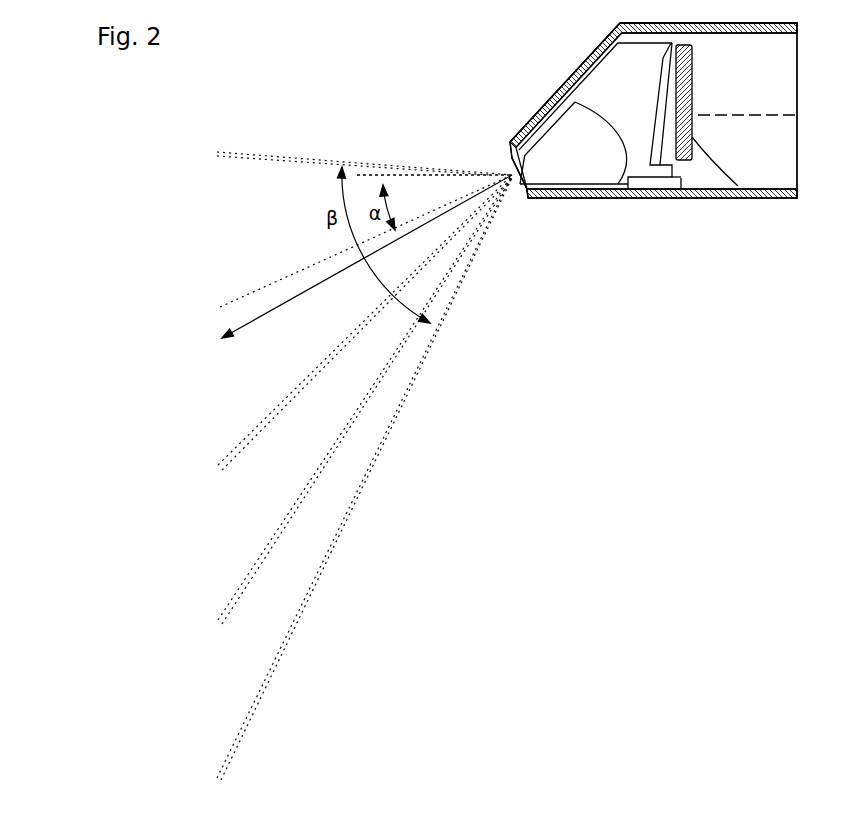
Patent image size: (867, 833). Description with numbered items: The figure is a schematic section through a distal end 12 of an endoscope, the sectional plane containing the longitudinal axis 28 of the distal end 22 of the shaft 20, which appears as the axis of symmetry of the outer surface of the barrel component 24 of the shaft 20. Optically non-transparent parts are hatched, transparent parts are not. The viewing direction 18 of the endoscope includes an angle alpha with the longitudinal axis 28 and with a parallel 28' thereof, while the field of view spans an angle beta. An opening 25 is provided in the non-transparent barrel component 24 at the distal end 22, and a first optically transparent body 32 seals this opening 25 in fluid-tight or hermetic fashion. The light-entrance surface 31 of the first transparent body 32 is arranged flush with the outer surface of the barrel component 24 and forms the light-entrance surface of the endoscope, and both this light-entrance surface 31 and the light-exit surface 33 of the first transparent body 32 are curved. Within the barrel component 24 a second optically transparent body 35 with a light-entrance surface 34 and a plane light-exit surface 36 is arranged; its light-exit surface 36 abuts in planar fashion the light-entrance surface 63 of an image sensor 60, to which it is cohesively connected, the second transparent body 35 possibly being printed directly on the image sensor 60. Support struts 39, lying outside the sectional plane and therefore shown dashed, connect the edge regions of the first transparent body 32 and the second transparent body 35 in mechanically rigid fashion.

The distal end 12 is at (470, 67).
The distal end of the shaft 22 is at (535, 82).
The barrel component 24 is at (577, 73).
The shaft 20 is at (722, 197).
The opening 25 is at (506, 158).
The longitudinal axis 28 is at (749, 187).
The parallel to the longitudinal axis 28' is at (434, 140).
The viewing direction 18 is at (277, 309).
The light-entrance surface 31 is at (512, 189).
The first optically transparent body 32 is at (563, 199).
The light-exit surface 33 is at (618, 187).
The support struts 39 is at (630, 190).
The light-entrance surface 34 is at (653, 162).
The second optically transparent body 35 is at (679, 168).
The light-exit surface 36 is at (700, 244).
The light-entrance surface of the image sensor 63 is at (707, 243).
The image sensor 60 is at (731, 198).